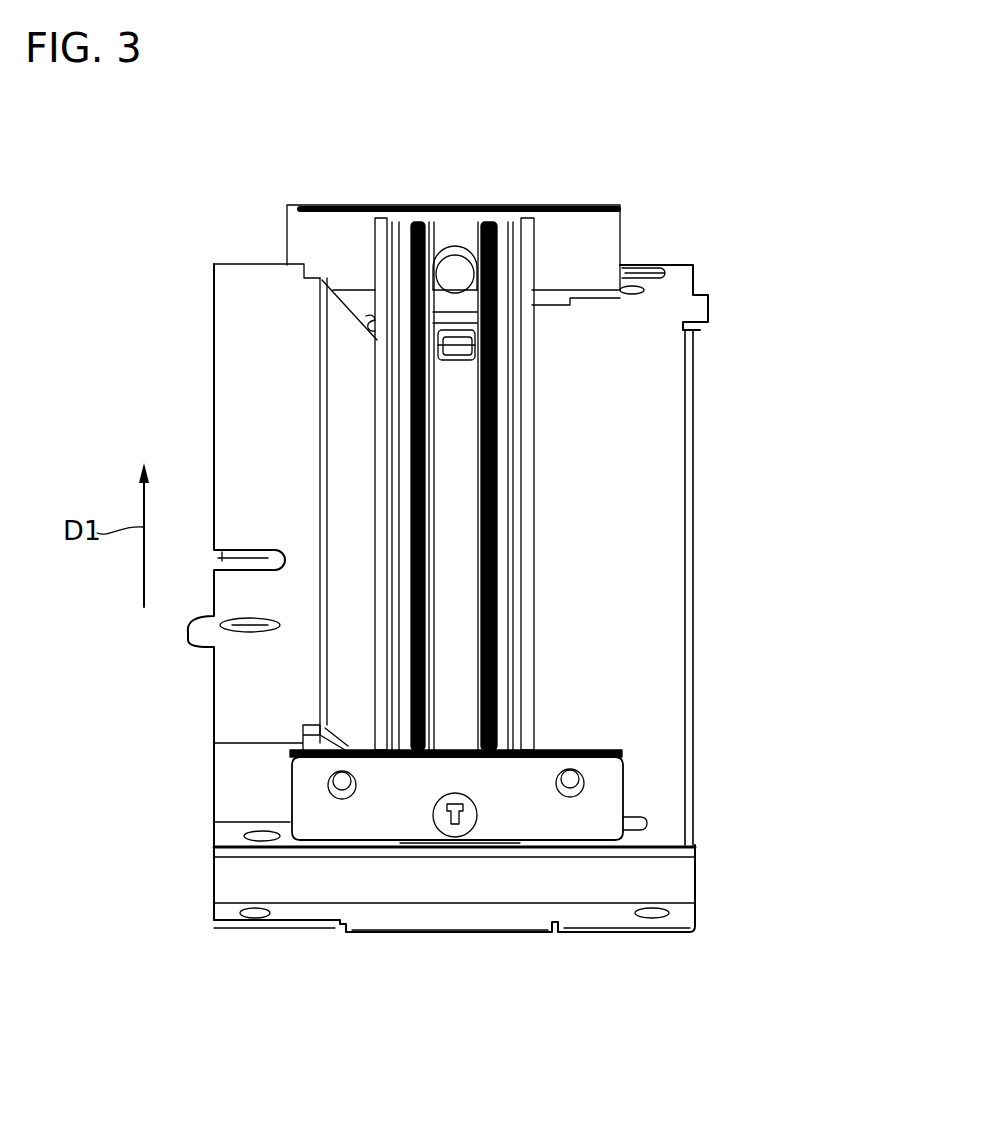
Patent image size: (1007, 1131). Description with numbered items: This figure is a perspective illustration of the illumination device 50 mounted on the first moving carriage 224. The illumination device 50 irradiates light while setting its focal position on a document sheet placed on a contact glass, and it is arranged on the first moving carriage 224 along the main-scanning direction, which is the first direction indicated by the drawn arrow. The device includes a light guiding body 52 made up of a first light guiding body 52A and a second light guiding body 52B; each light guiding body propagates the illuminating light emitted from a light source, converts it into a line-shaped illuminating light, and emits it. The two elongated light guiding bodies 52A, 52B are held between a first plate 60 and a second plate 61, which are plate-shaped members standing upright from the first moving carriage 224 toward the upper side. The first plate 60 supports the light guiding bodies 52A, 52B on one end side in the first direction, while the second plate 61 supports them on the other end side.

The illumination device 50 is at (608, 427).
The light guiding body 52 is at (621, 484).
The first light guiding body 52A is at (407, 570).
The second light guiding body 52B is at (503, 621).
The first plate 60 is at (568, 242).
The second plate 61 is at (598, 818).
The first moving carriage 224 is at (655, 710).